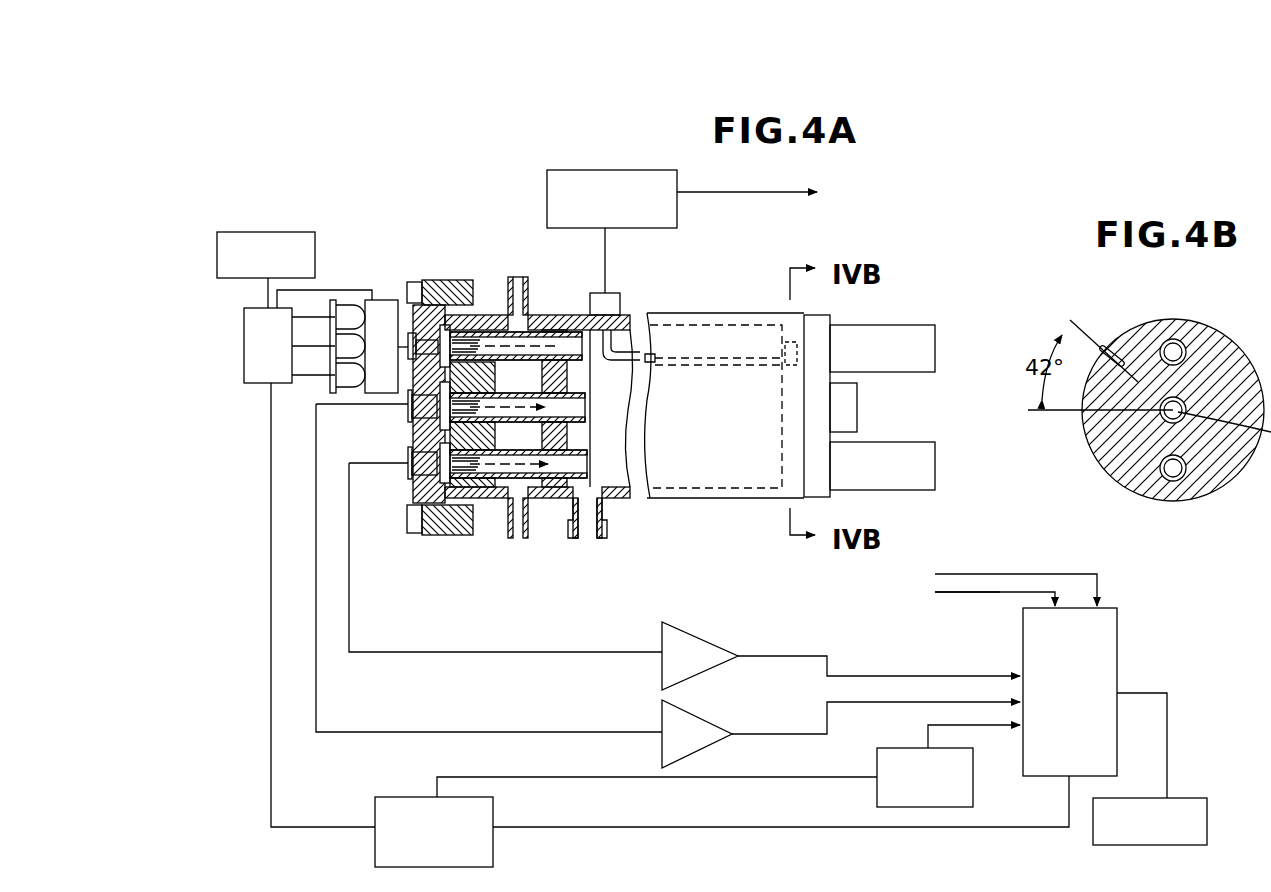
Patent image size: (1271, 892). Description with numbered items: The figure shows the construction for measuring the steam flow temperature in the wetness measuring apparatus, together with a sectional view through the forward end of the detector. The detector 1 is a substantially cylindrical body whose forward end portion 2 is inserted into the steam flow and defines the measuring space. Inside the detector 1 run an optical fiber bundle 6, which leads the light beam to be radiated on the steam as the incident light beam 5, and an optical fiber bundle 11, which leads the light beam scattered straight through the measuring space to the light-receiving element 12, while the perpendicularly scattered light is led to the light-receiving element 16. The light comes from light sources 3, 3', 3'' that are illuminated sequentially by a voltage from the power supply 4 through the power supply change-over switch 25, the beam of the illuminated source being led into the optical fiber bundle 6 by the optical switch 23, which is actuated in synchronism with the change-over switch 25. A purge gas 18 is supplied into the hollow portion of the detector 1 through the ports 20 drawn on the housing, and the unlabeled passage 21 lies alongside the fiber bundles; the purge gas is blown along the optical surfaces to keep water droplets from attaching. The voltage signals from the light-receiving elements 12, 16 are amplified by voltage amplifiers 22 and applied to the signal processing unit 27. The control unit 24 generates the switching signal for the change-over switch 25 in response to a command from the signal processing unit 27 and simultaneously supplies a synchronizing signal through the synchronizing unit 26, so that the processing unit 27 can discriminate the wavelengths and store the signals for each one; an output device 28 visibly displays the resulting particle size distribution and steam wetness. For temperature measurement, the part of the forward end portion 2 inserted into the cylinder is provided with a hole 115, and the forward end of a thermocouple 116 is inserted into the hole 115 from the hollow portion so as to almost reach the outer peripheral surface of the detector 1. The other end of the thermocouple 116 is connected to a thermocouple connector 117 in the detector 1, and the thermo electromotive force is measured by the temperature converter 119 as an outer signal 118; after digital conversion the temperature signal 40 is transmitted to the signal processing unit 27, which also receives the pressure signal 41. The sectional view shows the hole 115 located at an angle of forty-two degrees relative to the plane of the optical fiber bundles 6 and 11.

In FIG. 4A, the detector 1 is at (737, 313).
In FIG. 4A, the forward end portion 2 is at (833, 318).
In FIG. 4A, the light source 3 is at (332, 326).
In FIG. 4A, the light source 3' is at (332, 356).
In FIG. 4A, the light source 3'' is at (325, 386).
In FIG. 4A, the power supply 4 is at (315, 242).
In FIG. 4A, the incident light beam 5 is at (552, 345).
In FIG. 4B, the optical fiber bundle 6 is at (1180, 344).
In FIG. 4B, the optical fiber bundle 11 is at (1178, 472).
In FIG. 4A, the light-receiving element 12 is at (405, 470).
In FIG. 4A, the light-receiving element 16 is at (405, 412).
In FIG. 4A, the purge gas 18 is at (588, 548).
In FIG. 4A, the purge gas port 20 is at (517, 272).
In FIG. 4A, the light guide tube 21 is at (510, 442).
In FIG. 4A, the voltage amplifier 22 is at (752, 622).
In FIG. 4A, the optical switch 23 is at (384, 300).
In FIG. 4A, the control unit 24 is at (493, 812).
In FIG. 4A, the power supply change-over switch 25 is at (256, 384).
In FIG. 4A, the synchronizing unit 26 is at (973, 780).
In FIG. 4A, the signal processing unit 27 is at (1117, 626).
In FIG. 4A, the output device 28 is at (1190, 798).
In FIG. 4A, the temperature signal 40 is at (760, 194).
In FIG. 4A, the pressure signal 41 is at (963, 592).
In FIG. 4A, the hole 115 is at (797, 348).
In FIG. 4B, the hole 115 is at (1105, 352).
In FIG. 4A, the thermocouple 116 is at (608, 360).
In FIG. 4A, the thermocouple connector 117 is at (620, 296).
In FIG. 4A, the outer signal 118 is at (606, 250).
In FIG. 4A, the temperature converter 119 is at (547, 180).